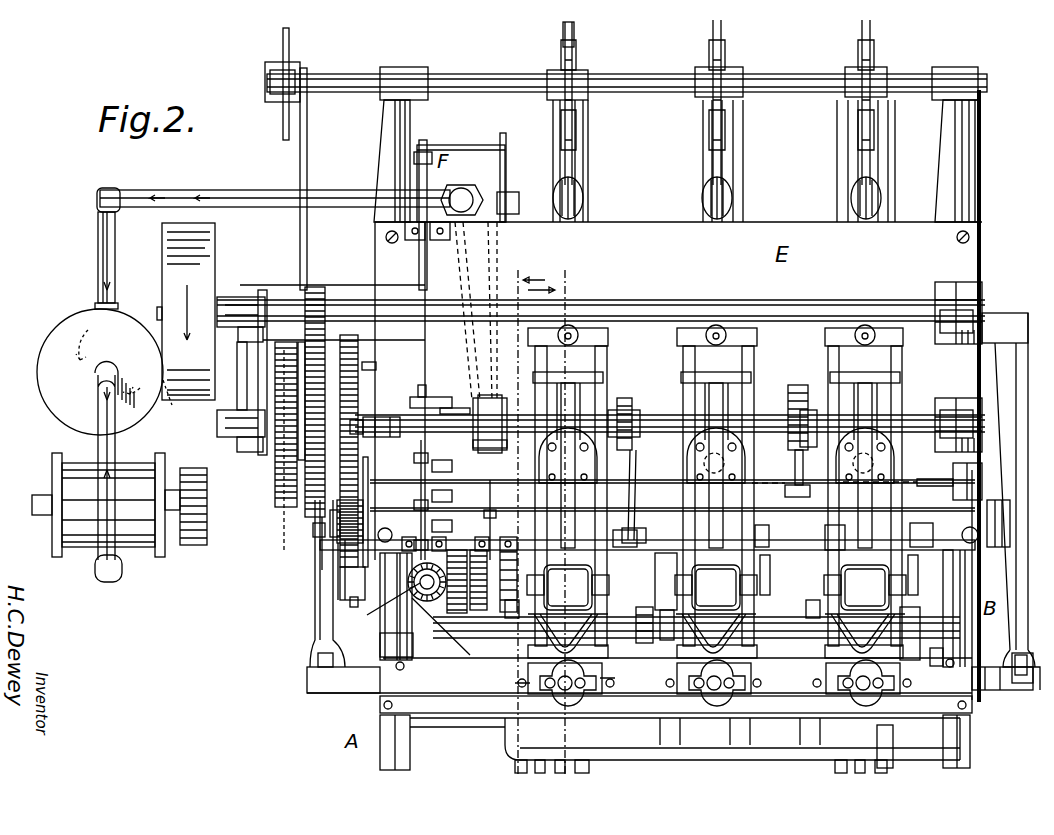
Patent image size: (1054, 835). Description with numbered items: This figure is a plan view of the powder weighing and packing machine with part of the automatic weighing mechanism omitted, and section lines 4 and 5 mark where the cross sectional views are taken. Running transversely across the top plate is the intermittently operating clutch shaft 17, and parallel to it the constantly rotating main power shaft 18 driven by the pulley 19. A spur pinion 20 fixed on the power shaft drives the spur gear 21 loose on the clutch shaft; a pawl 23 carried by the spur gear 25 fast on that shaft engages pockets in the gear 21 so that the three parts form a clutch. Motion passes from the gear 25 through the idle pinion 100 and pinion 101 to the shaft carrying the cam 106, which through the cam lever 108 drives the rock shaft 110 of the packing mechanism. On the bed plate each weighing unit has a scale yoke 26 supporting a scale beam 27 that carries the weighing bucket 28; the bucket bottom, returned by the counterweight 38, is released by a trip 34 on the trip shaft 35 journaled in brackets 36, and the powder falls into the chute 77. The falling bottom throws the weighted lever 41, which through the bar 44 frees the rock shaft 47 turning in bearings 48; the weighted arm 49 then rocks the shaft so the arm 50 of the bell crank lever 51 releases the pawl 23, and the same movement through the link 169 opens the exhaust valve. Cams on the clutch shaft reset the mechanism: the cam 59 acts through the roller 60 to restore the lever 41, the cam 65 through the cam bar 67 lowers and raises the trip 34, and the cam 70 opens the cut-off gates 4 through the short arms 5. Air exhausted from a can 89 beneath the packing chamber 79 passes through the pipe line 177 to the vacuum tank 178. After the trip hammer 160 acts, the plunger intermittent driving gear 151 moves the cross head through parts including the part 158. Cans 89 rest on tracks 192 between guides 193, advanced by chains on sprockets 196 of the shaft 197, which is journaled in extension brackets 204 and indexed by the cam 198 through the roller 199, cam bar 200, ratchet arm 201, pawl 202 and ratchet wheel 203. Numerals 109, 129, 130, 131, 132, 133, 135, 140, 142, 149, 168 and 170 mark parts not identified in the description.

The cut-off gates 4 is at (550, 524).
The short arms 5 is at (527, 522).
The clutch shaft 17 is at (658, 414).
The main power shaft 18 is at (378, 222).
The pulley 19 is at (208, 262).
The spur pinion 20 is at (318, 290).
The spur gear 21 is at (275, 455).
The pawl 23 is at (358, 386).
The spur gear 25 is at (378, 366).
The scale yoke or support 26 is at (742, 448).
The scale beam 27 is at (605, 367).
The weighing bucket 28 is at (716, 587).
The trip 34 is at (848, 607).
The trip shaft 35 is at (761, 537).
The brackets 36 is at (628, 532).
The counterweight 38 is at (812, 600).
The weighted lever 41 is at (840, 530).
The bar 44 is at (510, 512).
The rock shaft 47 is at (420, 265).
The bearings 48 is at (402, 540).
The arm 49 is at (452, 408).
The arm 50 is at (370, 418).
The bell crank lever 51 is at (425, 398).
The cam 59 is at (490, 400).
The roller 60 is at (428, 462).
The cam 65 is at (630, 400).
The cam bar 67 is at (636, 482).
The cam 70 is at (797, 385).
The chute 77 is at (716, 633).
The packing chamber 79 is at (60, 525).
The can 89 is at (585, 200).
The idle pinion 100 is at (313, 530).
The pinion 101 is at (412, 598).
The cam 106 is at (678, 562).
The cam lever 108 is at (692, 640).
The gear 109 is at (435, 640).
The rock shaft 110 is at (770, 617).
The lever 129 is at (338, 596).
The lever 130 is at (318, 613).
The block 131 is at (337, 570).
The lever 132 is at (376, 606).
The bracket 133 is at (381, 648).
The gear 135 is at (472, 621).
The bearing 140 is at (830, 678).
The bracket 142 is at (526, 690).
The plate 149 is at (333, 693).
The plunger intermittent driving gear 151 is at (490, 560).
The coacting part 158 is at (1012, 655).
The trip hammer 160 is at (725, 674).
The frame 168 is at (452, 145).
The link 169 is at (503, 134).
The block 170 is at (505, 175).
The pipe line 177 is at (152, 192).
The vacuum tank 178 is at (75, 330).
The tracks 192 is at (574, 95).
The guides 193 is at (553, 86).
The sprockets 196 is at (562, 28).
The shaft 197 is at (404, 68).
The cam 198 is at (280, 490).
The roller 199 is at (217, 425).
The cam bar 200 is at (302, 135).
The ratchet arm 201 is at (362, 78).
The pawl 202 is at (272, 70).
The ratchet wheel 203 is at (283, 115).
The extension brackets 204 is at (385, 110).